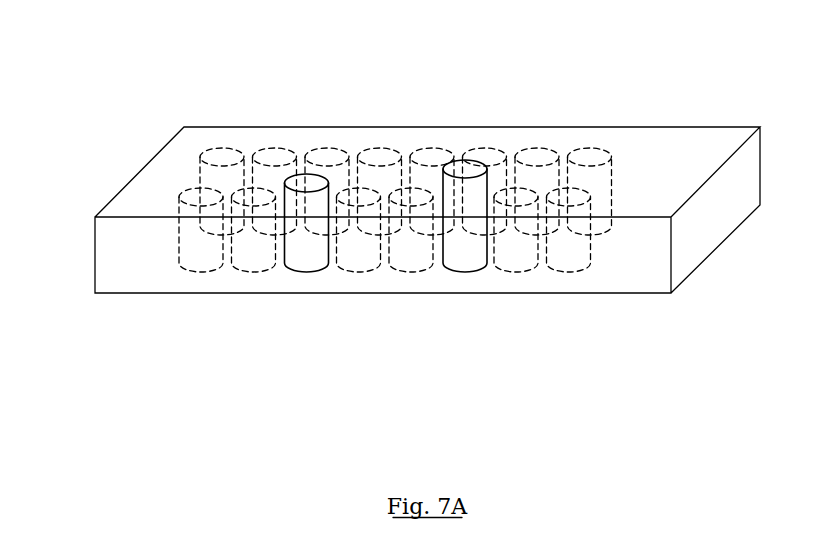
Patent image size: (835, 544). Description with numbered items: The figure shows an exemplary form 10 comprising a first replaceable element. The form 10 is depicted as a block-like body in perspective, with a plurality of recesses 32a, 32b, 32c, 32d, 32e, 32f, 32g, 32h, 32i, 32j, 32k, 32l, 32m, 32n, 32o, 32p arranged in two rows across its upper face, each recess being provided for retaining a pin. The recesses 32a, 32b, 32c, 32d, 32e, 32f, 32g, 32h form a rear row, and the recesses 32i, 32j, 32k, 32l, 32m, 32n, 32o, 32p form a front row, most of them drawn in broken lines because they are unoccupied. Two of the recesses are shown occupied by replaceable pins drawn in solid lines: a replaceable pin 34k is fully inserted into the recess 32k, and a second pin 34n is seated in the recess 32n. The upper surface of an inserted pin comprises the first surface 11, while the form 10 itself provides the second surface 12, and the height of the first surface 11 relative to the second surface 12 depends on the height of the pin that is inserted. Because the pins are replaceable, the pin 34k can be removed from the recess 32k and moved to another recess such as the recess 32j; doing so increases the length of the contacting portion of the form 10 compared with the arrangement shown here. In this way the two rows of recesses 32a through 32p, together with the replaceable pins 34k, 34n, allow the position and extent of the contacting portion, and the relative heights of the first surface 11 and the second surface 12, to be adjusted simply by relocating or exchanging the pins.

The form 10 is at (95, 72).
The first surface 11 is at (307, 185).
The second surface 12 is at (465, 187).
The recess 32a is at (223, 179).
The recess 32b is at (274, 179).
The recess 32c is at (332, 179).
The recess 32d is at (381, 179).
The recess 32e is at (432, 179).
The recess 32f is at (497, 174).
The recess 32g is at (537, 179).
The recess 32h is at (591, 179).
The recess 32i is at (199, 243).
The recess 32j is at (251, 243).
The recess 32k is at (307, 203).
The recess 32l is at (358, 243).
The recess 32m is at (408, 243).
The recess 32n is at (465, 200).
The recess 32o is at (513, 243).
The recess 32p is at (567, 243).
The replaceable pin 34k is at (302, 180).
The pillar top surface 34n is at (461, 167).